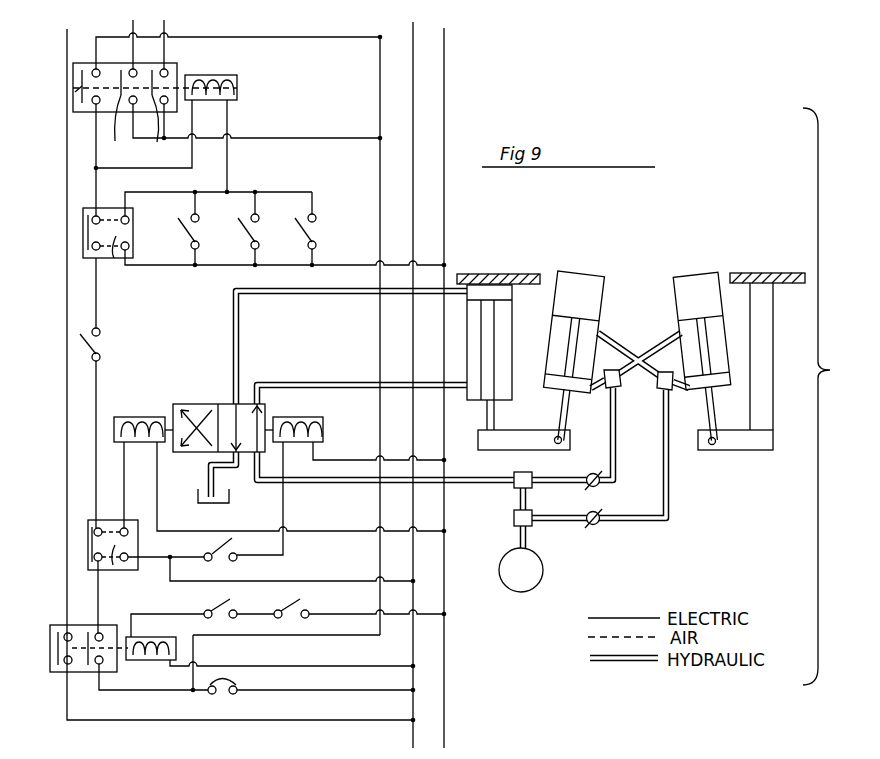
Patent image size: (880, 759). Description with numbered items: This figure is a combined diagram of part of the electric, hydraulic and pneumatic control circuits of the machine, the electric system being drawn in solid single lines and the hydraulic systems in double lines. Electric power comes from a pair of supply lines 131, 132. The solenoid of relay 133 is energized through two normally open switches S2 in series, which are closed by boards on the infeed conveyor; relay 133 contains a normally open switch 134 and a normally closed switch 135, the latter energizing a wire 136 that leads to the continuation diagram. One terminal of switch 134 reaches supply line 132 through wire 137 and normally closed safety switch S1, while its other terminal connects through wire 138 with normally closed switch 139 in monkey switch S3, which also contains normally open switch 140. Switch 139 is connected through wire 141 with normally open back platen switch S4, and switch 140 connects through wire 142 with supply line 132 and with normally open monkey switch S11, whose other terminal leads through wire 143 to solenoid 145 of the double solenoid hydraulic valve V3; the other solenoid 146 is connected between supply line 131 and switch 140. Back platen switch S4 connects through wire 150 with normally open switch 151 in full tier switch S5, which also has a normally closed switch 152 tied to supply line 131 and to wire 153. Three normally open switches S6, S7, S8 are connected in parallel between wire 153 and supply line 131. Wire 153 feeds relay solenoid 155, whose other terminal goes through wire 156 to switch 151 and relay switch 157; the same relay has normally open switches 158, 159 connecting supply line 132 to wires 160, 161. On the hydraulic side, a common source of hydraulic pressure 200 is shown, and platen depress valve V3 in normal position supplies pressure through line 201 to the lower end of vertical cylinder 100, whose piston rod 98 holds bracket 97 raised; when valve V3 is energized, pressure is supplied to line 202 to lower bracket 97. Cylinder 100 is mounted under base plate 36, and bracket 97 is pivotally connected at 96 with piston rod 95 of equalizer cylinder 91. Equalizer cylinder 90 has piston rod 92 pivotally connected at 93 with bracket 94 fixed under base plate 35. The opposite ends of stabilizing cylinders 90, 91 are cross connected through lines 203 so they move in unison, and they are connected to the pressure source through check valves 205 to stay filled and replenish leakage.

The base plate 35 is at (788, 272).
The base plate 36 is at (509, 273).
The vertical equalizer cylinder 90 is at (677, 295).
The vertical equalizer cylinder 91 is at (557, 313).
The piston rod 92 is at (705, 405).
The pivotal connection 93 is at (714, 451).
The bracket 94 is at (774, 408).
The piston rod 95 is at (561, 405).
The pivotal connection 96 is at (564, 439).
The bracket 97 is at (520, 449).
The piston rod 98 is at (486, 416).
The vertical cylinder 100 is at (515, 373).
The supply line 131 is at (446, 37).
The supply line 132 is at (410, 27).
The relay 133 is at (165, 661).
The normally open switch 134 is at (88, 664).
The normally closed switch 135 is at (60, 658).
The wire 136 is at (66, 133).
The wire 137 is at (145, 694).
The wire 138 is at (98, 604).
The normally closed switch 139 is at (90, 553).
The normally open switch 140 is at (112, 527).
The wire 141 is at (96, 389).
The wire 142 is at (150, 559).
The wire 143 is at (285, 509).
The solenoid 145 is at (303, 417).
The solenoid 146 is at (142, 417).
The wire 150 is at (98, 312).
The normally open switch 151 is at (84, 221).
The normally closed switch 152 is at (113, 259).
The wire 153 is at (228, 122).
The relay solenoid 155 is at (216, 75).
The wire 156 is at (95, 151).
The relay switch 157 is at (74, 89).
The normally open switch 158 is at (241, 129).
The normally open switch 159 is at (158, 131).
The wire 160 is at (131, 30).
The wire 161 is at (167, 28).
The source of hydraulic pressure 200 is at (515, 592).
The hydraulic line 201 is at (302, 381).
The hydraulic line 202 is at (324, 297).
The cross connecting lines 203 is at (654, 346).
The check valve 205 is at (601, 486).
The normally closed safety switch S1 is at (222, 684).
The normally open switch S2 is at (215, 608).
The monkey switch S3 is at (88, 545).
The back platen switch S4 is at (100, 350).
The full tier switch S5 is at (84, 248).
The back platen switch S6 is at (174, 228).
The tier lag switch S7 is at (234, 228).
The tier lag switch S8 is at (292, 228).
The monkey switch S11 is at (234, 561).
The double solenoid hydraulic valve V3 is at (212, 403).